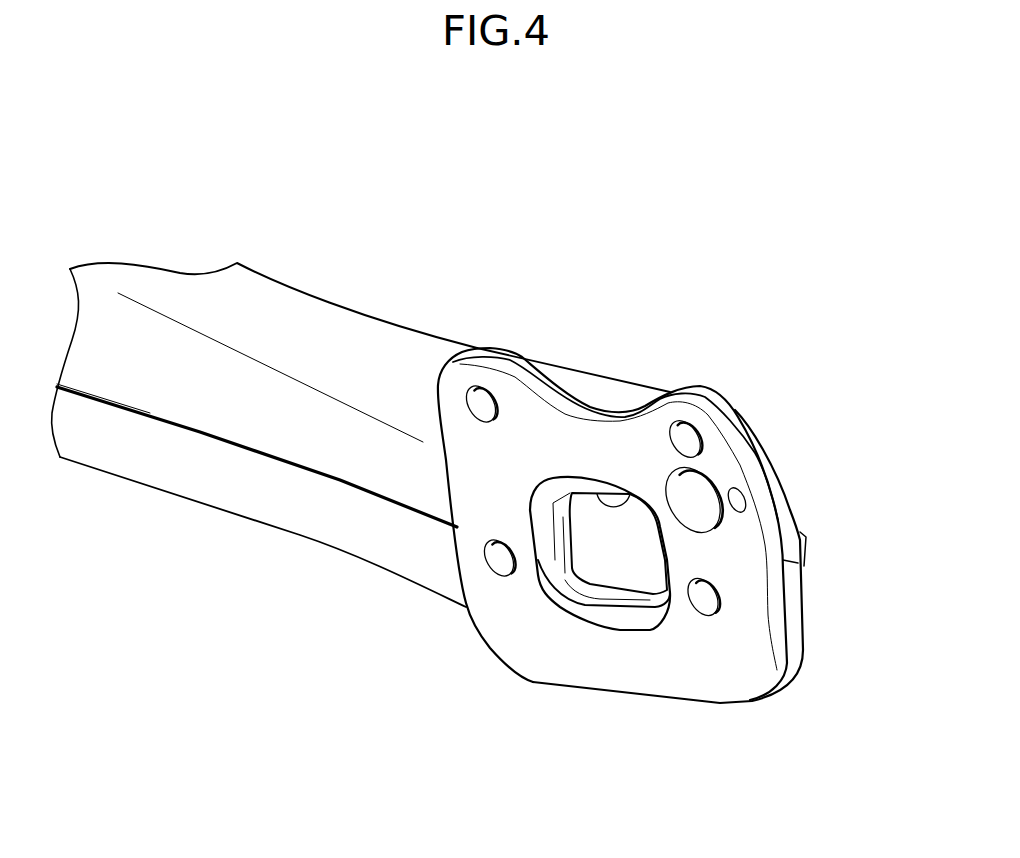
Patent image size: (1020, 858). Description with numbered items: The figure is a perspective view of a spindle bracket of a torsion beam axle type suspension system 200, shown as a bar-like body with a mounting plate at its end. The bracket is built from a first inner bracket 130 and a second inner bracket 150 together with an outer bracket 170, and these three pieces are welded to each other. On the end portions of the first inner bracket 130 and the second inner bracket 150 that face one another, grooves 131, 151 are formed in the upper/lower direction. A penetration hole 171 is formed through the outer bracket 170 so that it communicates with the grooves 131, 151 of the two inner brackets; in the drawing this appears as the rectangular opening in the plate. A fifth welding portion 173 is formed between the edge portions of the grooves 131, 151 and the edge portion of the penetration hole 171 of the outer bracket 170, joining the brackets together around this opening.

The spindle bracket of torsion beam axle suspension system 200 is at (551, 143).
The first inner bracket 130 is at (757, 467).
The groove 131 is at (631, 493).
The second inner bracket 150 is at (797, 600).
The groove 151 is at (631, 595).
The outer bracket 170 is at (628, 645).
The penetration hole 171 is at (627, 628).
The fifth welding portion 173 is at (617, 603).